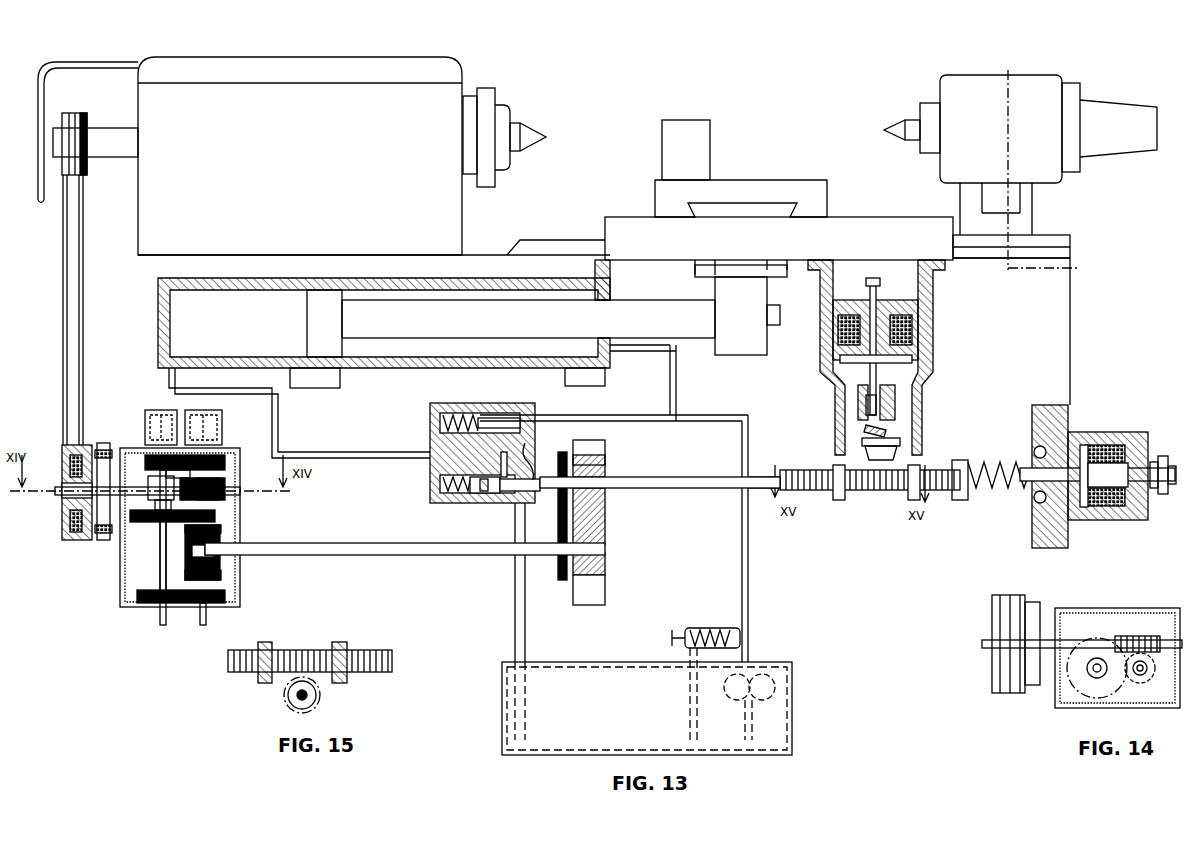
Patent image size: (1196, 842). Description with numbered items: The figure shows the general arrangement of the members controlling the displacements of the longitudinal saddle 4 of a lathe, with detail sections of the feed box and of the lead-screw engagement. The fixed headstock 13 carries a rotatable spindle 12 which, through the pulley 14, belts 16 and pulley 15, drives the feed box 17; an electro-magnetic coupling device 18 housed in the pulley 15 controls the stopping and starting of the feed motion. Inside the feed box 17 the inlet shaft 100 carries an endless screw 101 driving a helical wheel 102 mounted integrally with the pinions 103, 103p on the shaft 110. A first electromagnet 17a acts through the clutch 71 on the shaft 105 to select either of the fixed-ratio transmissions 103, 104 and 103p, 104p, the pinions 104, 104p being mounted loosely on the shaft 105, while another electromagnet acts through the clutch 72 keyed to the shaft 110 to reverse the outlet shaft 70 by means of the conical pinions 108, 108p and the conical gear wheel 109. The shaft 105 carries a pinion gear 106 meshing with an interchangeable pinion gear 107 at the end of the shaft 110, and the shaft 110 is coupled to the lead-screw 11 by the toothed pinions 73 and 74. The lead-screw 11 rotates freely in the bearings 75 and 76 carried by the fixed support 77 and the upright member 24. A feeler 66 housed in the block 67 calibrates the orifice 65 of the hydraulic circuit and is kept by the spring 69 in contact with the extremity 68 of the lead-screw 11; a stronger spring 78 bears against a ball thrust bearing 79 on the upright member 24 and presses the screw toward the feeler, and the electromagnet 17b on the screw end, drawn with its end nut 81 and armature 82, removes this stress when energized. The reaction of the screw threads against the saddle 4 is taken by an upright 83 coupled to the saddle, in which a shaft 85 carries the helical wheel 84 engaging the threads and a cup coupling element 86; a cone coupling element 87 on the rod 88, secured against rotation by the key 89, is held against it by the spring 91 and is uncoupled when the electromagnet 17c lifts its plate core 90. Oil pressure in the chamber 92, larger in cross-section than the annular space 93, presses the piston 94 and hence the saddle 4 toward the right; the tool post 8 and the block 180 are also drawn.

In FIG. 13, the saddle 4 is at (606, 217).
In FIG. 13, the tool post 8 is at (808, 184).
In FIG. 13, the lead-screw 11 is at (800, 468).
In FIG. 15, the lead-screw 11 is at (360, 650).
In FIG. 13, the spindle 12 is at (90, 152).
In FIG. 13, the headstock 13 is at (310, 121).
In FIG. 13, the pulley 14 is at (85, 118).
In FIG. 13, the pulley 15 is at (62, 524).
In FIG. 13, the belts 16 is at (70, 266).
In FIG. 13, the feed box 17 is at (120, 562).
In FIG. 14, the feed box 17 is at (1055, 700).
In FIG. 13, the electromagnet 17a is at (188, 400).
In FIG. 13, the electromagnet 17b is at (1075, 432).
In FIG. 13, the electromagnet 17c is at (912, 310).
In FIG. 13, the electro-magnetic coupling device 18 is at (100, 444).
In FIG. 13, the upright member 24 is at (1035, 406).
In FIG. 13, the orifice 65 is at (500, 495).
In FIG. 13, the feeler 66 is at (540, 457).
In FIG. 13, the block 67 is at (434, 403).
In FIG. 13, the extremity of the lead-screw 68 is at (545, 490).
In FIG. 13, the spring 69 is at (458, 494).
In FIG. 13, the outlet shaft 70 is at (370, 548).
In FIG. 13, the clutch 71 is at (160, 478).
In FIG. 13, the clutch 72 is at (192, 552).
In FIG. 13, the toothed pinion 73 is at (562, 582).
In FIG. 13, the toothed pinion 74 is at (568, 455).
In FIG. 13, the bearing 75 is at (605, 476).
In FIG. 13, the bearing 76 is at (1060, 482).
In FIG. 13, the fixed support 77 is at (605, 440).
In FIG. 13, the spring 78 is at (996, 490).
In FIG. 13, the ball thrust bearing 79 is at (1034, 452).
In FIG. 13, the nut 81 is at (1150, 497).
In FIG. 13, the armature 82 is at (1090, 500).
In FIG. 13, the upright 83 is at (933, 283).
In FIG. 13, the helical wheel 84 is at (900, 490).
In FIG. 15, the helical wheel 84 is at (316, 696).
In FIG. 13, the shaft 85 is at (845, 490).
In FIG. 13, the cup coupling element 86 is at (897, 452).
In FIG. 13, the cone coupling element 87 is at (900, 441).
In FIG. 13, the rod 88 is at (858, 390).
In FIG. 13, the key 89 is at (866, 402).
In FIG. 13, the plate core 90 is at (912, 358).
In FIG. 13, the spring 91 is at (866, 432).
In FIG. 13, the chamber 92 is at (238, 290).
In FIG. 13, the annular space 93 is at (375, 300).
In FIG. 13, the driving piston 94 is at (325, 290).
In FIG. 13, the inlet shaft 100 is at (150, 498).
In FIG. 14, the inlet shaft 100 is at (1090, 640).
In FIG. 13, the endless screw 101 is at (225, 494).
In FIG. 14, the endless screw 101 is at (1140, 636).
In FIG. 13, the helical wheel 102 is at (222, 480).
In FIG. 14, the helical wheel 102 is at (1143, 683).
In FIG. 13, the pinion 103 is at (228, 452).
In FIG. 13, the pinion 103p is at (215, 516).
In FIG. 13, the pinion 104 is at (148, 480).
In FIG. 13, the pinion 104p is at (160, 510).
In FIG. 14, the pinion 104p is at (1100, 700).
In FIG. 13, the shaft 105 is at (160, 552).
In FIG. 13, the pinion gear 106 is at (148, 603).
In FIG. 13, the pinion gear 107 is at (200, 612).
In FIG. 13, the conical pinion 108 is at (221, 580).
In FIG. 13, the conical pinion 108p is at (221, 529).
In FIG. 13, the conical gear wheel 109 is at (220, 566).
In FIG. 13, the shaft 110 is at (190, 470).
In FIG. 13, the block 180 is at (955, 500).